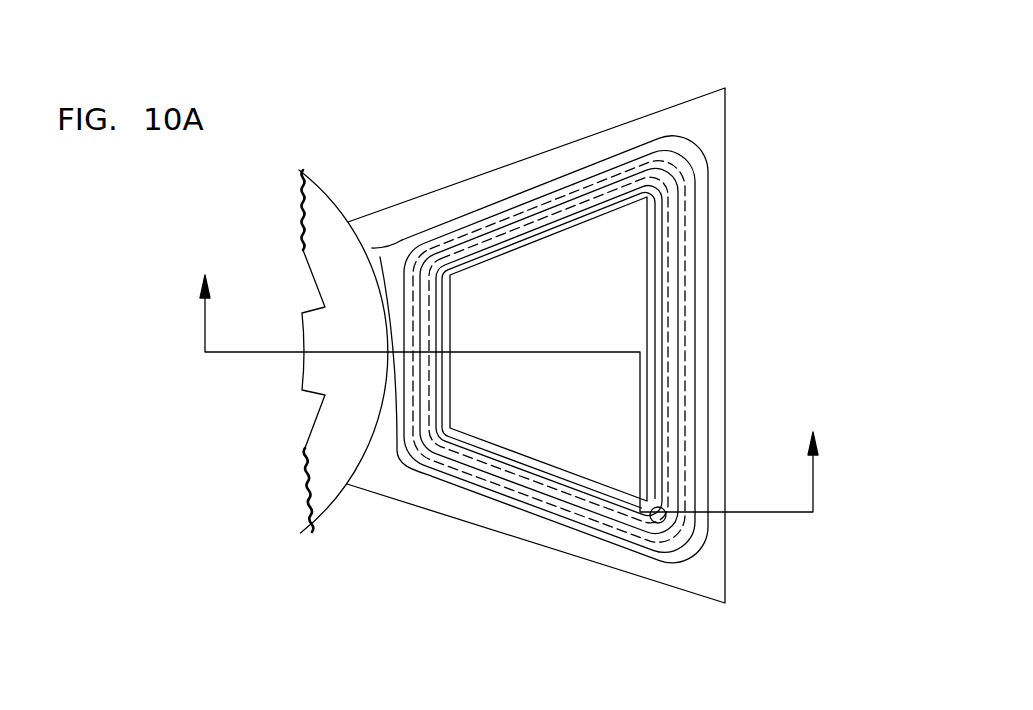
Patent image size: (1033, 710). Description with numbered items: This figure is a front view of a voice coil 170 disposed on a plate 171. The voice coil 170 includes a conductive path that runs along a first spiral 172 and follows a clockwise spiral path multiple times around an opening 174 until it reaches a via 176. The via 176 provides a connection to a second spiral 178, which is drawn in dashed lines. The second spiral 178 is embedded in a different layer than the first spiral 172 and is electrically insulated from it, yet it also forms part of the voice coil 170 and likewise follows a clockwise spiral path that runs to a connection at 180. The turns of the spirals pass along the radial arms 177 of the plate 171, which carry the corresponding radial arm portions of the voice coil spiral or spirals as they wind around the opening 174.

The voice coil 170 is at (698, 146).
The plate 171 is at (725, 88).
The first spiral 172 is at (390, 247).
The opening 174 is at (568, 312).
The via 176 is at (664, 510).
The radial arms 177 is at (558, 188).
The second spiral 178 is at (686, 272).
The connection 180 is at (379, 255).